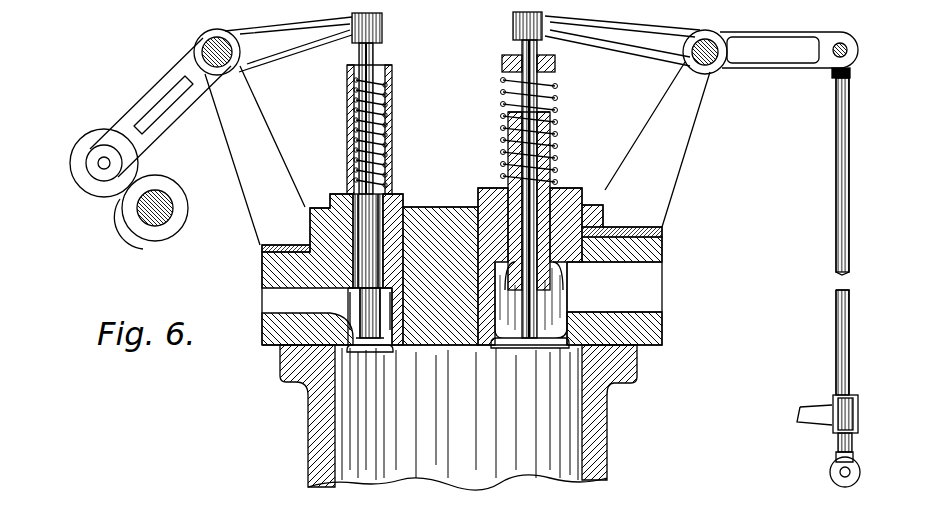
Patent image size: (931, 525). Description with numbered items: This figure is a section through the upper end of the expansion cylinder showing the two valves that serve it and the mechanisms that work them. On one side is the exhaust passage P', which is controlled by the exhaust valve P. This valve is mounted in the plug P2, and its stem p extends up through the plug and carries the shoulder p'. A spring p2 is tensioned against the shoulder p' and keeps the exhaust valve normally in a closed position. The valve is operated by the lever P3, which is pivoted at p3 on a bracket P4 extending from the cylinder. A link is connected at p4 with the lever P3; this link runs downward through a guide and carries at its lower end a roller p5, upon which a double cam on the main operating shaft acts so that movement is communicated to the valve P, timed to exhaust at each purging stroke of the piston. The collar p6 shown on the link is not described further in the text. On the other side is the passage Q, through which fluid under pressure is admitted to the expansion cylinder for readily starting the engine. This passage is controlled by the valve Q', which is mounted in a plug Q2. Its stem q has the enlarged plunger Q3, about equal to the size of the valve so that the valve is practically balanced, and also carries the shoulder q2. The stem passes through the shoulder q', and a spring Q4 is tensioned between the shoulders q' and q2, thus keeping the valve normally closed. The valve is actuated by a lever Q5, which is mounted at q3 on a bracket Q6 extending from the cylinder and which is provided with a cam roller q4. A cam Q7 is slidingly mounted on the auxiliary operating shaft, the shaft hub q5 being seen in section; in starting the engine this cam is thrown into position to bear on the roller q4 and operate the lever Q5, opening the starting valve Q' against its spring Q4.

The passage Q is at (282, 269).
The valve Q' is at (394, 334).
The plug Q2 is at (405, 194).
The enlarged plunger Q3 is at (398, 183).
The spring Q4 is at (392, 110).
The lever Q5 is at (317, 33).
The bracket Q6 is at (255, 155).
The cam Q7 is at (162, 182).
The stem q is at (383, 103).
The shoulder q' is at (354, 135).
The shoulder q2 is at (393, 77).
The pivot q3 is at (235, 42).
The cam roller q4 is at (133, 168).
The cam shaft q5 is at (169, 197).
The exhaust valve P is at (549, 180).
The exhaust passage P' is at (635, 299).
The plug P2 is at (578, 184).
The lever P3 is at (565, 18).
The bracket P4 is at (657, 144).
The stem p is at (545, 201).
The shoulder p' is at (542, 61).
The spring p2 is at (556, 100).
The pivot p3 is at (688, 60).
The connection p4 is at (833, 56).
The roller p5 is at (813, 487).
The push rod guide collar p6 is at (833, 428).